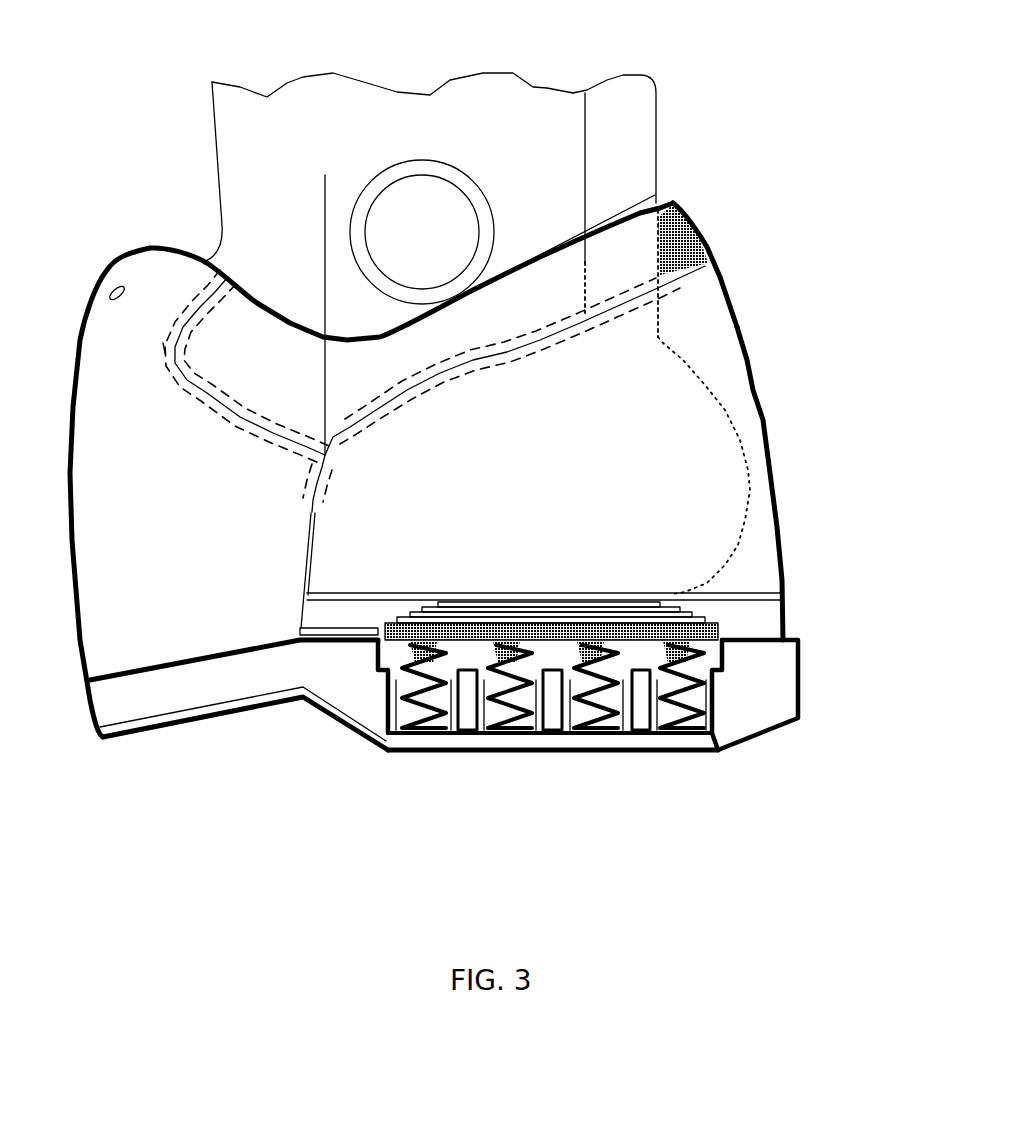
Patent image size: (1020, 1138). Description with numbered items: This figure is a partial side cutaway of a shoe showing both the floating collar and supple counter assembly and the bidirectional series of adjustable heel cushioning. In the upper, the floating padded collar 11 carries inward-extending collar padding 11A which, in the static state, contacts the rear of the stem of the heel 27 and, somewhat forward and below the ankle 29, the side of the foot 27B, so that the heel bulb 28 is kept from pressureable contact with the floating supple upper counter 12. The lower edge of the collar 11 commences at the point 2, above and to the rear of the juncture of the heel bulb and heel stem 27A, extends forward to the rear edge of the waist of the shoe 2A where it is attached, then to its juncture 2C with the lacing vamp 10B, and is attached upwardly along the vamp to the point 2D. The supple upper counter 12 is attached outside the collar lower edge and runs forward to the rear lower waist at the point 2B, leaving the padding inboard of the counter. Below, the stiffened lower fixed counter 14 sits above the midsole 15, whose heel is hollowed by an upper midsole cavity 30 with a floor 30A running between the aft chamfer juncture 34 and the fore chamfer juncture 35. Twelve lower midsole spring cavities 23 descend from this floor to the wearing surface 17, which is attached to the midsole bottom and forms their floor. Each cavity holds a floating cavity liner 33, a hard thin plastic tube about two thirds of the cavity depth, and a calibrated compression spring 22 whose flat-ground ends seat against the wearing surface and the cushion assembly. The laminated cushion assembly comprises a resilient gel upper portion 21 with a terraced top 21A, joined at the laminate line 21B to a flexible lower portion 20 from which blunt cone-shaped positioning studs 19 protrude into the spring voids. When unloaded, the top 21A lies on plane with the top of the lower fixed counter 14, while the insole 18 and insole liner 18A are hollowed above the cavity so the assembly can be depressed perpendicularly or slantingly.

The commencement point of the collar lower edge 2 is at (710, 263).
The rear edge of the waist of the shoe 2A is at (508, 302).
The attachment point on the rear lower waist 2B is at (312, 512).
The juncture with the lacing vamp 2C is at (167, 347).
The upper attachment point on the lacing vamp 2D is at (228, 277).
The lacing vamp 10B is at (147, 283).
The floating padded collar 11 is at (697, 223).
The collar padding 11A is at (680, 248).
The floating supple upper counter 12 is at (765, 418).
The lower fixed counter 14 is at (783, 602).
The midsole 15 is at (340, 636).
The wearing surface 17 is at (467, 733).
The insole 18 is at (303, 640).
The insole liner 18A is at (303, 687).
The positioning studs 19 is at (682, 645).
The lower portion of the cushion assembly 20 is at (723, 645).
The upper portion of the cushion assembly 21 is at (723, 638).
The top of the cushion assembly 21A is at (655, 603).
The laminate line 21B is at (557, 605).
The calibrated compression springs 22 is at (432, 655).
The lower midsole spring cavities 23 is at (653, 650).
The stem of the heel 27 is at (625, 127).
The juncture of the heel bulb and heel stem 27A is at (660, 337).
The side of the foot 27B is at (655, 195).
The heel bulb 28 is at (748, 470).
The ankle 29 is at (393, 167).
The upper midsole cavity 30 is at (337, 680).
The floor of the upper midsole cavity 30A is at (712, 677).
The floating cavity liners 33 is at (708, 702).
The juncture of the rear midsole chamfer 34 is at (713, 735).
The juncture of the forward midsole chamfer 35 is at (393, 655).